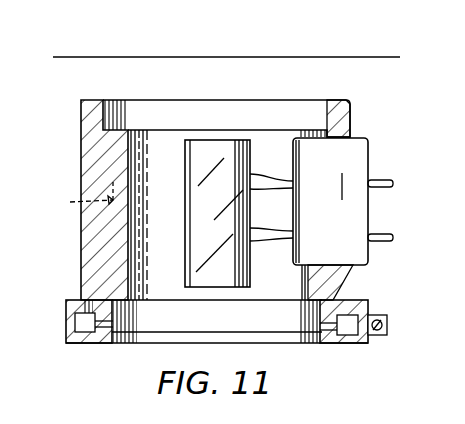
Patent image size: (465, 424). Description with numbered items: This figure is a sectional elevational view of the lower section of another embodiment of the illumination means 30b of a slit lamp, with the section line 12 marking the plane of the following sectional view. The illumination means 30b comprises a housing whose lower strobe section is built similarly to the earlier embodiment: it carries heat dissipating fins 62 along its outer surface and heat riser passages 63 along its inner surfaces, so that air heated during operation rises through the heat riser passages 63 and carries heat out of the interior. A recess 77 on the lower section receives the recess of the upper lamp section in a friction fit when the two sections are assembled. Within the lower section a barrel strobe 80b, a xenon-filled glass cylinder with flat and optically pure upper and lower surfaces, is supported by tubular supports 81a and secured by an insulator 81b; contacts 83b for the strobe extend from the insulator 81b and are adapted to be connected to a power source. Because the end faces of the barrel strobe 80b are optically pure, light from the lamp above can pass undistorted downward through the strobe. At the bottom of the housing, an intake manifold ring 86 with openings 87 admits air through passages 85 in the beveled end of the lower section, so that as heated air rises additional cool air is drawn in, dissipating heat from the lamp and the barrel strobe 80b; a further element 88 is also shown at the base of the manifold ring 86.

The section line 12- 12 is at (61, 56).
The heat dissipating fins 62 is at (81, 162).
The heat riser passages 63 is at (76, 197).
The recess 77 is at (110, 113).
The illumination means 30b is at (376, 124).
The barrel strobe 80b is at (185, 179).
The tubular supports 81a is at (277, 176).
The insulator 81b is at (368, 152).
The contacts 83b is at (385, 188).
The passages 85 is at (112, 322).
The intake manifold ring 86 is at (334, 343).
The openings 87 is at (97, 310).
The ground lug 88 is at (380, 335).